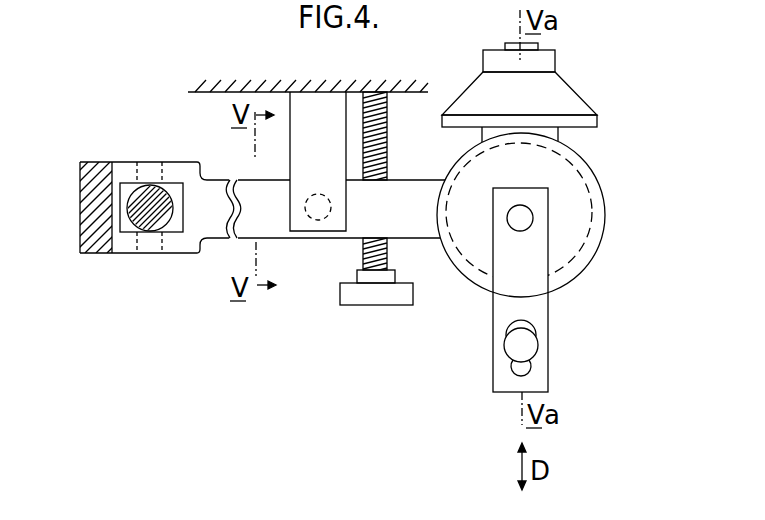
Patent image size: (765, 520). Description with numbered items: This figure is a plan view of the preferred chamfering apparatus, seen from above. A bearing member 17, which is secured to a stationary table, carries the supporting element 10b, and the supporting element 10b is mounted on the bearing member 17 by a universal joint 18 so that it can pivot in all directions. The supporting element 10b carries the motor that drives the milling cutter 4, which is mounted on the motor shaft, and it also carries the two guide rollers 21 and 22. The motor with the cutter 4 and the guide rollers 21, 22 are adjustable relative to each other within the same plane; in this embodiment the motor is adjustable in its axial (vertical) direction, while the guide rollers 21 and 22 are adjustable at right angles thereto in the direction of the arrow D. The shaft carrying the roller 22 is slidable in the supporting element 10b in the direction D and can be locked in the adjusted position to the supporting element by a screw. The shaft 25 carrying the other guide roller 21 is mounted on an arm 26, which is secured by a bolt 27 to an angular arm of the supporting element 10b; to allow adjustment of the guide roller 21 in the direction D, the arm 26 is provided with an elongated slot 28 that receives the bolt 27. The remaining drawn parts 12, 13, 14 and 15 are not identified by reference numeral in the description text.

The milling cutter 4 is at (568, 258).
The supporting element 10b is at (285, 240).
The pivot pin 12 is at (320, 222).
The adjusting screw 13 is at (388, 148).
The post 14 is at (300, 118).
The support 15 is at (414, 99).
The bearing member 17 is at (85, 235).
The universal joint 18 is at (152, 222).
The guide roller 21 is at (605, 232).
The guide roller 22 is at (562, 98).
The shaft 25 is at (523, 222).
The arm 26 is at (535, 317).
The bolt 27 is at (515, 348).
The elongated slot 28 is at (527, 368).